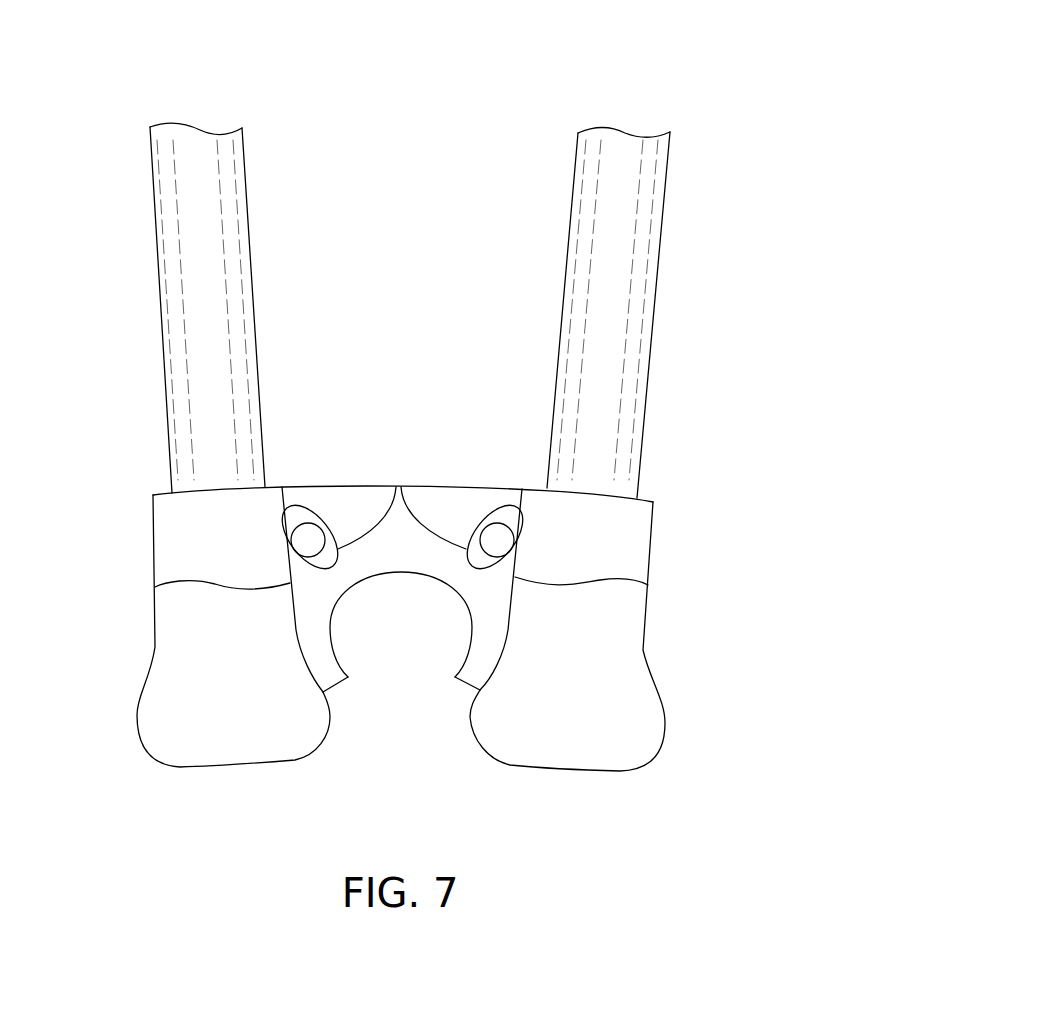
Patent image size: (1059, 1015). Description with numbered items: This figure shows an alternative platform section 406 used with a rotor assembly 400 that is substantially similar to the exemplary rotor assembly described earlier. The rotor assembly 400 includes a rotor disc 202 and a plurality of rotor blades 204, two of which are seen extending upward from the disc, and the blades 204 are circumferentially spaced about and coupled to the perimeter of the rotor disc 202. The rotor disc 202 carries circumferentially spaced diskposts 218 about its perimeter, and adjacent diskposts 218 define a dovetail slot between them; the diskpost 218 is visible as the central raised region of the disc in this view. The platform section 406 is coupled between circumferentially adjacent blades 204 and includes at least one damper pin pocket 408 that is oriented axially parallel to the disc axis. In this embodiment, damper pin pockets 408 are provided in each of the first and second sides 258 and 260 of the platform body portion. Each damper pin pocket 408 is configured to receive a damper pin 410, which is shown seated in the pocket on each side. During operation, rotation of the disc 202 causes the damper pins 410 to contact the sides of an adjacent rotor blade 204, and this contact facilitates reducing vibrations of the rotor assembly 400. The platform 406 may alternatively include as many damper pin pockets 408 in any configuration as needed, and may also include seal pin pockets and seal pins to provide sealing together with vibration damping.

The rotor assembly 400 is at (622, 67).
The rotor disc 202 is at (418, 813).
The rotor blades 204 is at (135, 368).
The diskposts 218 is at (382, 639).
The first side 258 is at (155, 587).
The second side 260 is at (648, 585).
The platform section 406 is at (513, 495).
The damper pin pocket 408 is at (398, 487).
The damper pin 410 is at (304, 522).